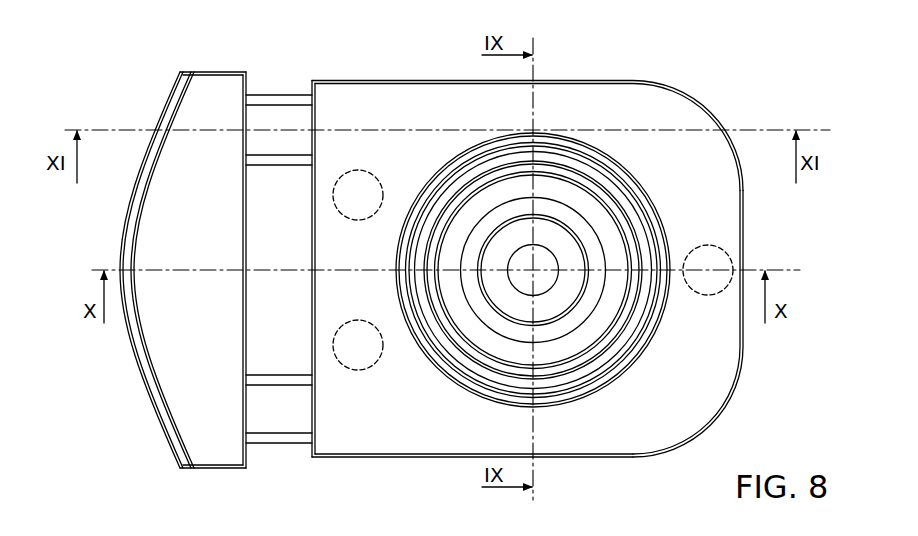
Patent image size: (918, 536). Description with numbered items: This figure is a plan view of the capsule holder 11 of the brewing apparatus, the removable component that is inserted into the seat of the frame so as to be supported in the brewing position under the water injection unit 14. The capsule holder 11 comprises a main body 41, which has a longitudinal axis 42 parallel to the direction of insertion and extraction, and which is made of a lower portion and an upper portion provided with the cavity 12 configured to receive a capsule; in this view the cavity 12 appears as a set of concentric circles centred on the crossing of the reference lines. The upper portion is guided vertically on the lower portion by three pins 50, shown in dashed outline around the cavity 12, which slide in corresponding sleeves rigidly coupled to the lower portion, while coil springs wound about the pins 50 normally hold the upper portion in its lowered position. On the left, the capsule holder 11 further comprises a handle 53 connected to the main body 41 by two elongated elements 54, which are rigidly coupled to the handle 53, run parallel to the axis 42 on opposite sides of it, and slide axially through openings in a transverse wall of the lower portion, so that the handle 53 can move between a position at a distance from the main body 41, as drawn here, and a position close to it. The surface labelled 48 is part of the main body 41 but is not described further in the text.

The capsule holder 11 is at (144, 71).
The cavity 12 is at (599, 367).
The water injection unit 14 is at (658, 108).
The main body 41 is at (746, 376).
The longitudinal axis 42 is at (165, 272).
The bottom wall of housing 48 is at (595, 442).
The pins 50 is at (375, 183).
The handle 53 is at (175, 408).
The elongated elements 54 is at (283, 98).